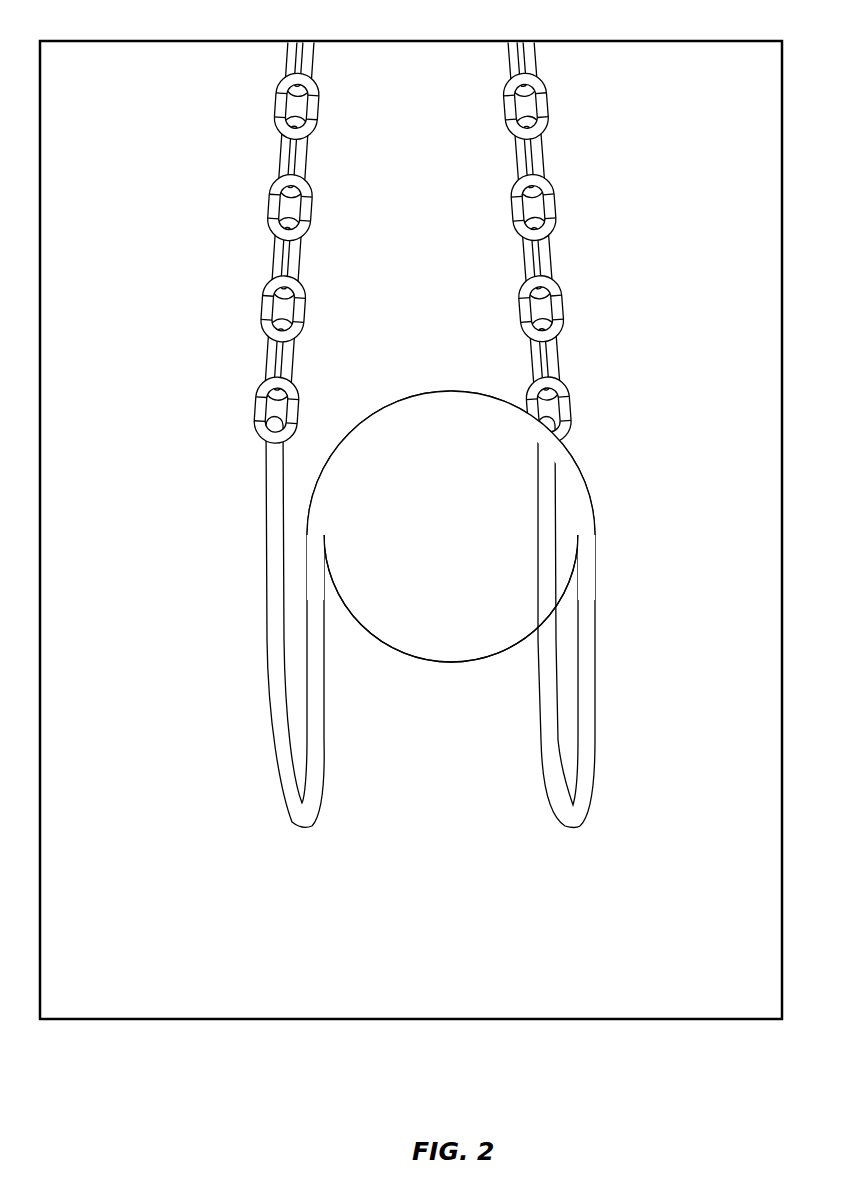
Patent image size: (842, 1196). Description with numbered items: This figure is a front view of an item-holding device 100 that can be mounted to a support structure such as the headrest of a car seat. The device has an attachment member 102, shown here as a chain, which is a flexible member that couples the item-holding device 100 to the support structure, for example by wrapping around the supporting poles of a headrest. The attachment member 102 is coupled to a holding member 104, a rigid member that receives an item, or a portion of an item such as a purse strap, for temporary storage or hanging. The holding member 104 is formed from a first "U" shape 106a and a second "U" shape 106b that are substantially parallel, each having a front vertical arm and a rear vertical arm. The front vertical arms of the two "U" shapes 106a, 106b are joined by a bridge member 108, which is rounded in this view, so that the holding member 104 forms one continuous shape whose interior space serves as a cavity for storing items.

The item-holding device 100 is at (120, 151).
The attachment member 102 is at (270, 192).
The holding member 104 is at (596, 553).
The first "U" shape 106a is at (589, 815).
The second "U" shape 106b is at (283, 813).
The bridge member 108 is at (445, 391).